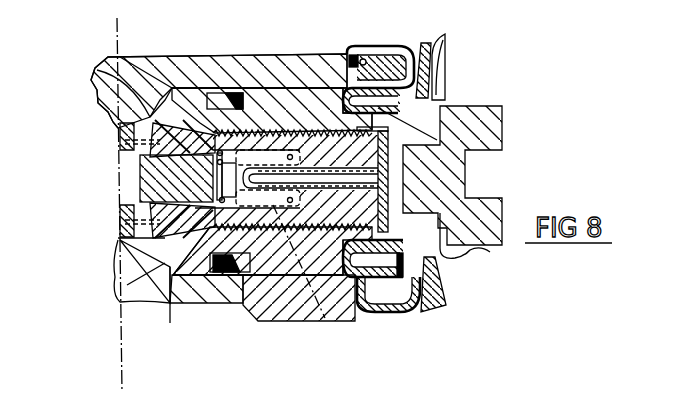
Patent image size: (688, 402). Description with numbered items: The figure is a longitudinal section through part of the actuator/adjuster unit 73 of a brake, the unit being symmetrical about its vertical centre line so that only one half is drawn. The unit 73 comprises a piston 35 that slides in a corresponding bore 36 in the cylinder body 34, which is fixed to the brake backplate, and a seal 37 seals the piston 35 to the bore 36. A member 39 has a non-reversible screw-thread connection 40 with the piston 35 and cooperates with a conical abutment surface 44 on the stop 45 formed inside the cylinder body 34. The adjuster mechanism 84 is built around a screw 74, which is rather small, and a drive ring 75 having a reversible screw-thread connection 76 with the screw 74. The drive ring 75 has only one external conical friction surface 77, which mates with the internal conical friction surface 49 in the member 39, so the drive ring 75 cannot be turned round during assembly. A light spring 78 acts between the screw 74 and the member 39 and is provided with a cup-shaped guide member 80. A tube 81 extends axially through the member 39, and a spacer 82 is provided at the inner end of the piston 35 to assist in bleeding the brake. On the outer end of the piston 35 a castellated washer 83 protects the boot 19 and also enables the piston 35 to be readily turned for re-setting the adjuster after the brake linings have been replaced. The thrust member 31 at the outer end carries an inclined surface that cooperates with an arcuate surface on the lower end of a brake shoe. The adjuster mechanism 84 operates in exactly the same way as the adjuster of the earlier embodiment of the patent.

The member 39 is at (111, 196).
The external conical friction surface 77 is at (117, 55).
The adjuster mechanism 84 is at (172, 95).
The actuator/adjuster unit 73 is at (217, 52).
The cup-shaped guide member 80 is at (263, 157).
The piston 35 is at (298, 100).
The non-reversible screw-thread connection 40 is at (320, 128).
The conical abutment surface 44 is at (97, 70).
The reversible screw-thread connection 76 is at (160, 115).
The screw 74 is at (147, 180).
The internal conical friction surface 49 is at (120, 237).
The stop 45 is at (147, 282).
The drive ring 75 is at (153, 293).
The cylinder body 34 is at (205, 297).
The seal 37 is at (243, 303).
The bore 36 is at (285, 303).
The light spring 78 is at (322, 305).
The boot 19 is at (388, 305).
The castellated washer 83 is at (428, 312).
The thrust member 31 is at (480, 110).
The tube 81 is at (387, 143).
The spacer 82 is at (435, 192).